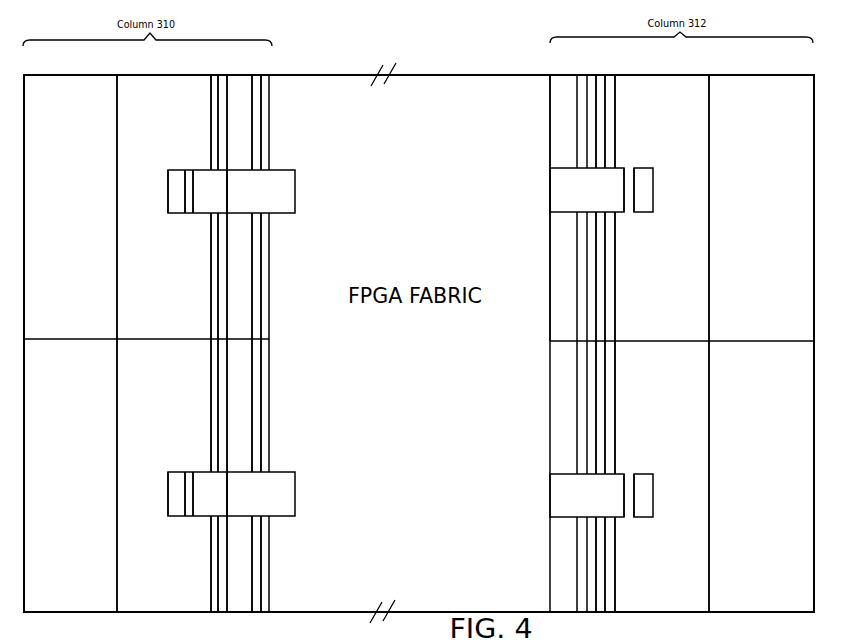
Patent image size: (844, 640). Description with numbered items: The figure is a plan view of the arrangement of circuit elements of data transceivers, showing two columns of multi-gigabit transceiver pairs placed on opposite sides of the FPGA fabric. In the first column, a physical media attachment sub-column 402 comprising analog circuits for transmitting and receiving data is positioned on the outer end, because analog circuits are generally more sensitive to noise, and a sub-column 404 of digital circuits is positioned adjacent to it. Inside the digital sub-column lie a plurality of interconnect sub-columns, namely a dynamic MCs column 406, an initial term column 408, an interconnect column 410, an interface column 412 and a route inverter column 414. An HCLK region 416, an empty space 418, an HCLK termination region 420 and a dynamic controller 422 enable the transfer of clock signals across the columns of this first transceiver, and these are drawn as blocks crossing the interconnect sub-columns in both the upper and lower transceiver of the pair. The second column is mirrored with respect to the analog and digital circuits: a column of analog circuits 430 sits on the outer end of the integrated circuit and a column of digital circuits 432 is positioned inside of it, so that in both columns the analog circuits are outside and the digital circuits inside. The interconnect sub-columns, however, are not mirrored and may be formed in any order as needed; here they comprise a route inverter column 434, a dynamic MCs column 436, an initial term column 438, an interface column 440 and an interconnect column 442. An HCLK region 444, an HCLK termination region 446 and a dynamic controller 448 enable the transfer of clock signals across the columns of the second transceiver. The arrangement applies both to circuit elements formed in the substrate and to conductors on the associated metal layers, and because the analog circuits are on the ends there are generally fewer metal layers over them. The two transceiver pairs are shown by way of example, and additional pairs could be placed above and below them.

The physical media attachment (PMA) sub-column 402 is at (43, 77).
The sub-column of digital circuits 404 is at (173, 75).
The dynamic MCs column 406 is at (213, 75).
The initial term column 408 is at (228, 75).
The interconnect column 410 is at (250, 75).
The interface column 412 is at (257, 128).
The route inverter column 414 is at (263, 165).
The HCLK region 416 is at (283, 193).
The empty space 418 is at (209, 170).
The HCLK termination region 420 is at (188, 187).
The dynamic controller 422 is at (177, 207).
The column of analog circuits 430 is at (737, 76).
The column of digital circuits 432 is at (678, 74).
The route inverter column 434 is at (615, 74).
The dynamic MCs column 436 is at (603, 74).
The initial term column 438 is at (595, 74).
The interface column 440 is at (577, 74).
The interconnect column 442 is at (550, 138).
The HCLK region 444 is at (550, 185).
The HCLK termination region 446 is at (630, 170).
The dynamic controller 448 is at (647, 202).